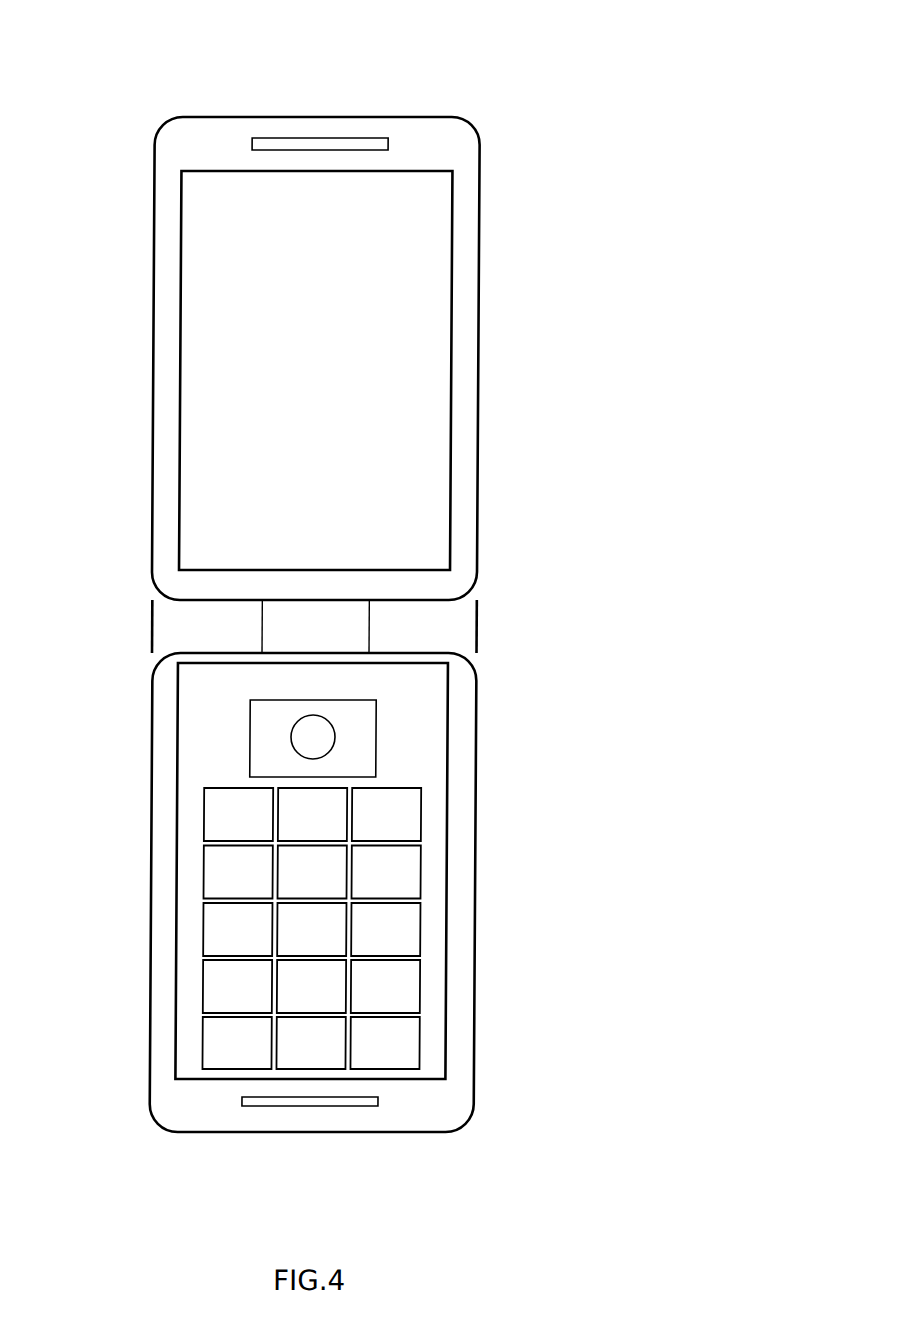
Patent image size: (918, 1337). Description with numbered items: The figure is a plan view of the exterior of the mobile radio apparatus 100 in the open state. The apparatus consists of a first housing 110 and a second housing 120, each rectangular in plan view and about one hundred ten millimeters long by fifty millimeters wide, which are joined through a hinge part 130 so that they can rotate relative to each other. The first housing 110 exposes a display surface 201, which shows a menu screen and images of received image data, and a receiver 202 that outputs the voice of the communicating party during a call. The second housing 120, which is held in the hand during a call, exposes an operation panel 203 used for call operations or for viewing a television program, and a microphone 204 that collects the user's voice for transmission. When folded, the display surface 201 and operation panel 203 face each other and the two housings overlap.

The mobile radio apparatus 100 is at (560, 57).
The first housing 110 is at (226, 116).
The second housing 120 is at (478, 1063).
The hinge part 130 is at (172, 618).
The display surface 201 is at (437, 366).
The receiver 202 is at (328, 138).
The operation panel 203 is at (214, 1032).
The microphone 204 is at (319, 1106).